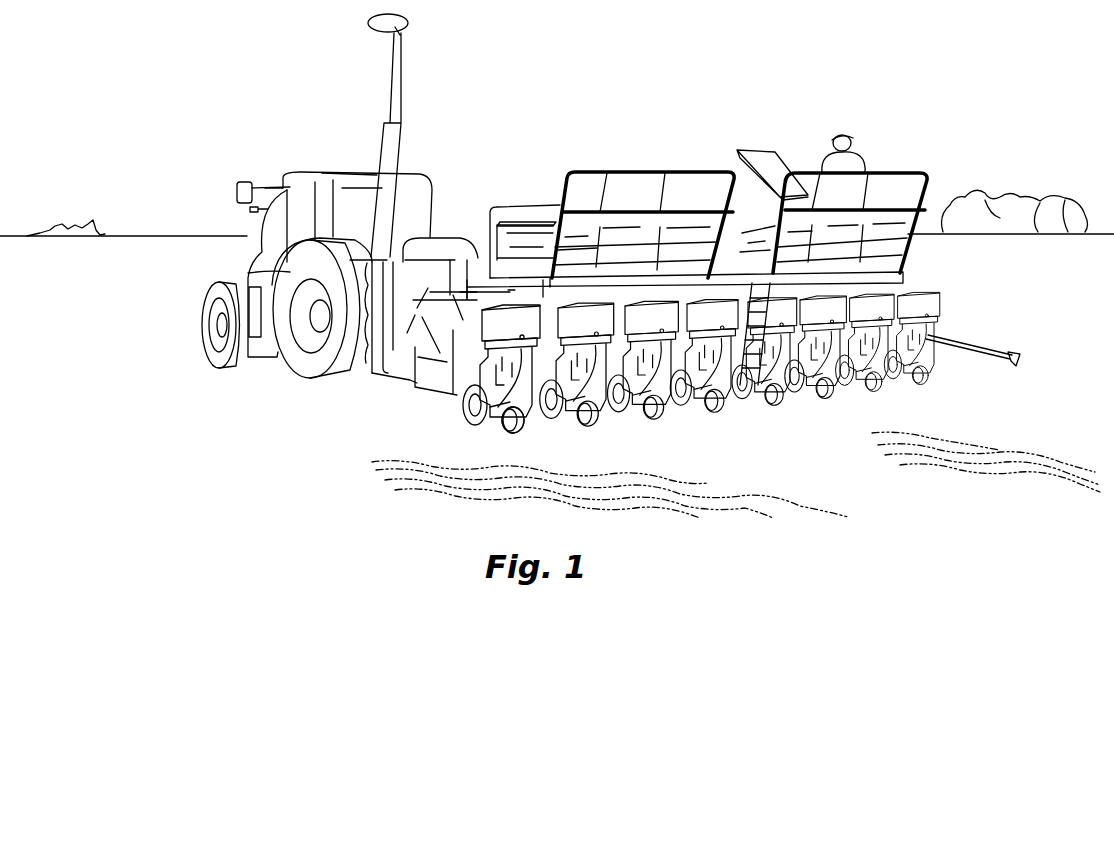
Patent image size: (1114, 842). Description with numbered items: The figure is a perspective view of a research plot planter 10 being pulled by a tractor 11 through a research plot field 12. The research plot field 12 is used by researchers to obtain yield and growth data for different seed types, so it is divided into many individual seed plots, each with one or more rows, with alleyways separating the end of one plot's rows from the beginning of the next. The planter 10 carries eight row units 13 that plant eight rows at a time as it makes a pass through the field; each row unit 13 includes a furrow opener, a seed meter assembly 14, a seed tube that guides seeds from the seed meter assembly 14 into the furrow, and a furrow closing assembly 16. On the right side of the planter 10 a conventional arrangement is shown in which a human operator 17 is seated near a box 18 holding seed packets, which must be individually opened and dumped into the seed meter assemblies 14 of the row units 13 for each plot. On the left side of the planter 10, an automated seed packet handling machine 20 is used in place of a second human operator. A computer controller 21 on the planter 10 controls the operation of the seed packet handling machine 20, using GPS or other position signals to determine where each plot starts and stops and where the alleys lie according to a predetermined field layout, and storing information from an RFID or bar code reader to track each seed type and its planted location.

The research plot planter 10 is at (348, 400).
The tractor 11 is at (263, 253).
The research plot field 12 is at (710, 485).
The row units 13 is at (872, 328).
The seed meter assembly 14 is at (493, 370).
The furrow closing assembly 16 is at (510, 423).
The human operator 17 is at (857, 155).
The box 18 is at (765, 158).
The automated seed packet handling machine 20 is at (520, 242).
The computer controller 21 is at (532, 228).